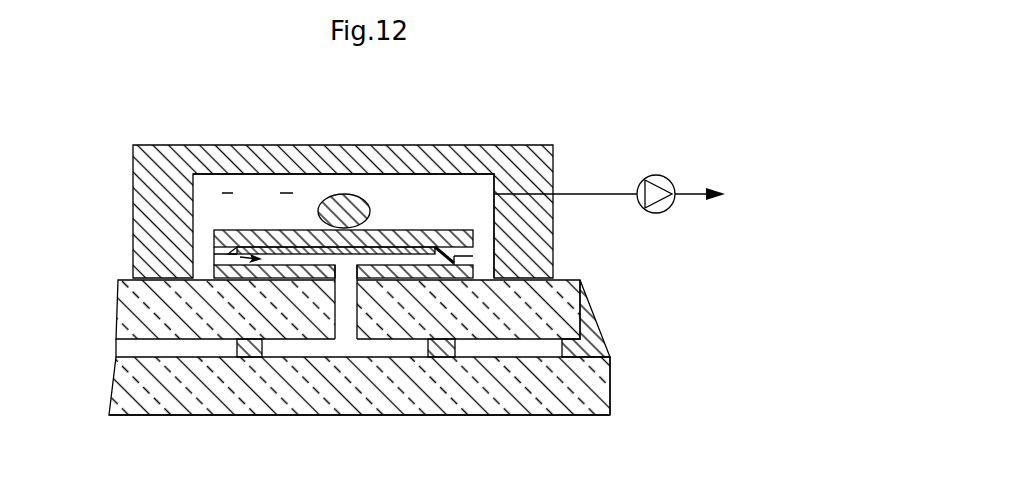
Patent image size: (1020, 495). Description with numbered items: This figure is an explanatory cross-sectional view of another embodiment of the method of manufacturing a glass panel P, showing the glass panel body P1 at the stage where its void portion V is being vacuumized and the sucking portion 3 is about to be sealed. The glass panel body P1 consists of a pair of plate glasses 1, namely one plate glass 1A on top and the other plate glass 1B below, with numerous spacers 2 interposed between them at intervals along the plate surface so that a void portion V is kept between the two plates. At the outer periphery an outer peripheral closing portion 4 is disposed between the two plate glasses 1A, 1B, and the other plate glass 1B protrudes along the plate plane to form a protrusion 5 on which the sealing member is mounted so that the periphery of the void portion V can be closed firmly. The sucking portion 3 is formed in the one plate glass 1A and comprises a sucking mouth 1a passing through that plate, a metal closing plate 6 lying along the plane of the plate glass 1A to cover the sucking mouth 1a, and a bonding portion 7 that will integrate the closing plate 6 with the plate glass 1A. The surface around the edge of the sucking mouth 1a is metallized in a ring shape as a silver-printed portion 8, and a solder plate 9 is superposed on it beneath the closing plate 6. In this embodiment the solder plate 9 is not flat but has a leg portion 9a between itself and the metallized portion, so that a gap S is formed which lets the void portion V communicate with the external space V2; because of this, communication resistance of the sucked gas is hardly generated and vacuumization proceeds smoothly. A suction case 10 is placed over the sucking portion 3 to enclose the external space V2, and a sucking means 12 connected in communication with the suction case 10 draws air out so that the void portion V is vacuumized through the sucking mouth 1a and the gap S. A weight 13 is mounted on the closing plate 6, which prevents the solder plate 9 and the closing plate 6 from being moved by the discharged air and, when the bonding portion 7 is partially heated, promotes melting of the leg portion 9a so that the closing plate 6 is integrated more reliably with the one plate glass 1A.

The plate glass 1 is at (307, 362).
The one plate glass 1A is at (292, 362).
The other plate glass 1B is at (142, 372).
The sucking mouth 1a is at (347, 312).
The spacer 2 is at (440, 357).
The sucking portion 3 is at (219, 210).
The outer peripheral closing portion 4 is at (601, 332).
The protrusion 5 is at (590, 392).
The closing plate 6 is at (308, 228).
The bonding portion 7 is at (413, 179).
The silver-printed portion 8 is at (474, 270).
The solder plate 9 is at (413, 179).
The leg portion 9a is at (441, 252).
The suction case 10 is at (143, 183).
The sucking means 12 is at (652, 175).
The weight 13 is at (357, 195).
The gap S is at (235, 253).
The void portion V is at (298, 352).
The external space V2 is at (257, 199).
The glass panel P is at (632, 440).
The glass panel body P1 is at (486, 423).